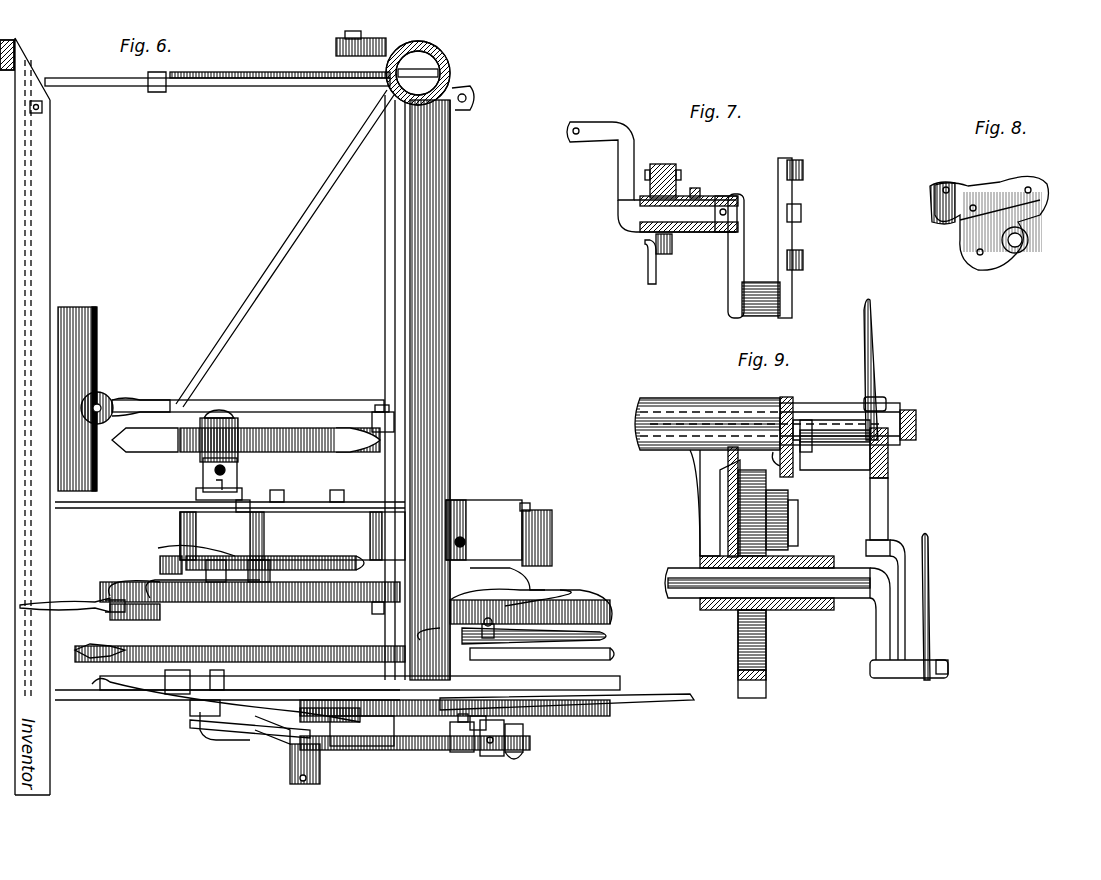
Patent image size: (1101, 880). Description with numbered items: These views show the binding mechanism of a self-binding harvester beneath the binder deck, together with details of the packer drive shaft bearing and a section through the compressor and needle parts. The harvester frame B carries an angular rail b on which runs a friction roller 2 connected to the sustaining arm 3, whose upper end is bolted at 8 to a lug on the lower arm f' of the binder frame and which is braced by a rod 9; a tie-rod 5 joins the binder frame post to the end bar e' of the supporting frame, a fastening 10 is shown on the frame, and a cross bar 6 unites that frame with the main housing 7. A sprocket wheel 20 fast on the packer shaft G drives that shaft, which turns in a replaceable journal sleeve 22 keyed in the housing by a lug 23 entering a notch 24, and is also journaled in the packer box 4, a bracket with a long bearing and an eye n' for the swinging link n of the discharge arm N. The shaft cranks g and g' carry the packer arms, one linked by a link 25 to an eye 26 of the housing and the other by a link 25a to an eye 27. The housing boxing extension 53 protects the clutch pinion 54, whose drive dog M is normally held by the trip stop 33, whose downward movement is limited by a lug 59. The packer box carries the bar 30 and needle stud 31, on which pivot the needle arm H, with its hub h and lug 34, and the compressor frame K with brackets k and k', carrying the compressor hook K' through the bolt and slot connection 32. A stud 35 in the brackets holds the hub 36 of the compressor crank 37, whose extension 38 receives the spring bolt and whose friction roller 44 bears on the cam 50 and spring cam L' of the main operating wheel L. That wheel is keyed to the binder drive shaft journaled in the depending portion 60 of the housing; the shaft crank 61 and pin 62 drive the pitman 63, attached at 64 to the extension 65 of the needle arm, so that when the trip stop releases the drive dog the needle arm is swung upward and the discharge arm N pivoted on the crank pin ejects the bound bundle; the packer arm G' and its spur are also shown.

In FIG. 6, the harvester frame B is at (50, 238).
In FIG. 6, the screw 10 is at (42, 107).
In FIG. 6, the tie-rod 5 is at (217, 68).
In FIG. 6, the end of supporting frame bar e' is at (172, 91).
In FIG. 6, the brace rod 9 is at (262, 290).
In FIG. 6, the rail b is at (96, 352).
In FIG. 6, the friction roller 2 is at (104, 396).
In FIG. 6, the sustaining arm 3 is at (318, 400).
In FIG. 6, the bolt connection 8 is at (372, 425).
In FIG. 6, the sprocket wheel 20 is at (246, 440).
In FIG. 6, the packer shaft G is at (201, 572).
In FIG. 7, the packer shaft G is at (753, 256).
In FIG. 6, the journal sleeve 22 is at (237, 474).
In FIG. 6, the lug 23 is at (214, 484).
In FIG. 6, the notch 24 is at (196, 493).
In FIG. 6, the cross bar 6 is at (135, 510).
In FIG. 6, the main housing 7 is at (292, 525).
In FIG. 6, the overhanging extension of housing boxing 53 is at (180, 524).
In FIG. 6, the clutch pinion 54 is at (214, 560).
In FIG. 6, the lug 59 is at (258, 560).
In FIG. 6, the spring cam L' is at (275, 547).
In FIG. 9, the spring cam L' is at (700, 502).
In FIG. 6, the drive dog M is at (185, 546).
In FIG. 6, the bracket of compressor frame k is at (484, 515).
In FIG. 9, the bracket of compressor frame k is at (777, 424).
In FIG. 6, the eye 26 is at (552, 548).
In FIG. 6, the link 25 is at (524, 587).
In FIG. 6, the crank of packer shaft g is at (177, 578).
In FIG. 7, the crank of packer shaft g is at (783, 299).
In FIG. 6, the compressor frame K is at (356, 603).
In FIG. 9, the compressor frame K is at (831, 423).
In FIG. 6, the packer arm G' is at (99, 620).
In FIG. 6, the needle arm H is at (268, 660).
In FIG. 9, the needle arm H is at (888, 458).
In FIG. 6, the compressor hook K' is at (534, 623).
In FIG. 9, the compressor hook K' is at (883, 369).
In FIG. 6, the hub of the needle arm h is at (498, 615).
In FIG. 9, the hub of the needle arm h is at (840, 404).
In FIG. 6, the trip stop 33 is at (296, 586).
In FIG. 6, the lug 34 is at (372, 612).
In FIG. 9, the lug 34 is at (818, 442).
In FIG. 6, the bolt and slot connection 32 is at (492, 622).
In FIG. 6, the arm or bar 30 is at (296, 688).
In FIG. 9, the arm or bar 30 is at (916, 416).
In FIG. 6, the needle stud or shaft 31 is at (490, 708).
In FIG. 9, the needle stud or shaft 31 is at (720, 404).
In FIG. 6, the discharge arm N is at (610, 704).
In FIG. 9, the discharge arm N is at (930, 622).
In FIG. 6, the crank 61 is at (520, 666).
In FIG. 9, the crank 61 is at (875, 632).
In FIG. 6, the crank pin 62 is at (486, 722).
In FIG. 9, the crank pin 62 is at (948, 666).
In FIG. 6, the eye 27 is at (474, 742).
In FIG. 6, the link 25a is at (522, 760).
In FIG. 6, the pitman 63 is at (440, 696).
In FIG. 9, the pitman 63 is at (902, 586).
In FIG. 6, the crank of packer shaft g' is at (270, 753).
In FIG. 7, the crank of packer shaft g' is at (651, 177).
In FIG. 6, the swinging link n is at (215, 751).
In FIG. 7, the swinging link n is at (636, 272).
In FIG. 7, the packer box 4 is at (696, 186).
In FIG. 8, the packer box 4 is at (1040, 222).
In FIG. 7, the eye or opening n' is at (664, 258).
In FIG. 8, the eye or opening n' is at (972, 273).
In FIG. 9, the lower arm of the binder frame f' is at (757, 407).
In FIG. 9, the bracket of compressor frame k' is at (885, 393).
In FIG. 9, the stud 35 is at (771, 462).
In FIG. 9, the extension of the needle arm 65 is at (888, 500).
In FIG. 9, the pitman attachment 64 is at (888, 540).
In FIG. 9, the cam extension 50 is at (740, 522).
In FIG. 9, the compressor crank 37 is at (800, 498).
In FIG. 9, the friction roller 44 is at (798, 538).
In FIG. 9, the hub of compressor crank 36 is at (846, 442).
In FIG. 9, the upward extension 38 is at (852, 470).
In FIG. 9, the depending portion of main housing 60 is at (722, 610).
In FIG. 9, the main operating wheel L is at (762, 654).